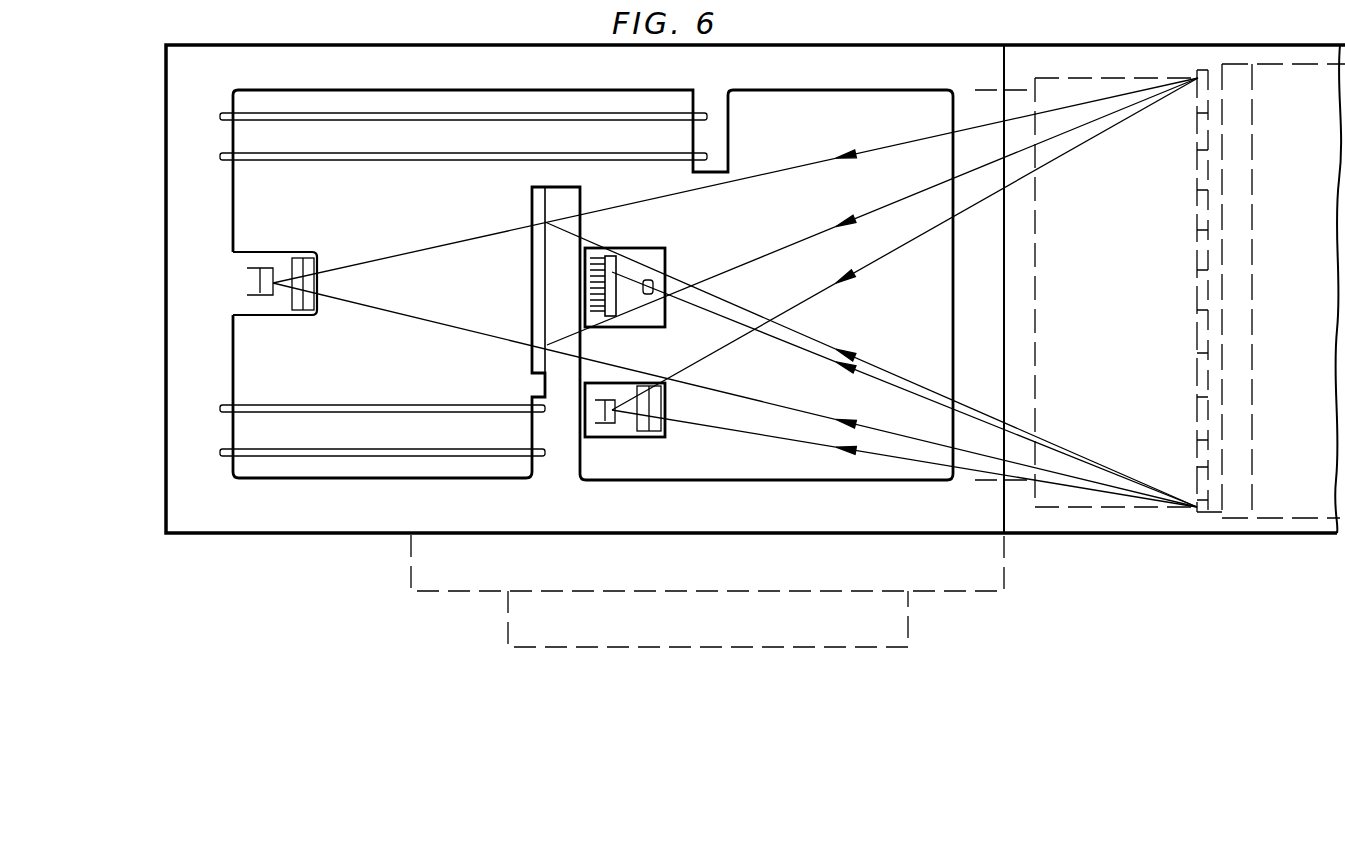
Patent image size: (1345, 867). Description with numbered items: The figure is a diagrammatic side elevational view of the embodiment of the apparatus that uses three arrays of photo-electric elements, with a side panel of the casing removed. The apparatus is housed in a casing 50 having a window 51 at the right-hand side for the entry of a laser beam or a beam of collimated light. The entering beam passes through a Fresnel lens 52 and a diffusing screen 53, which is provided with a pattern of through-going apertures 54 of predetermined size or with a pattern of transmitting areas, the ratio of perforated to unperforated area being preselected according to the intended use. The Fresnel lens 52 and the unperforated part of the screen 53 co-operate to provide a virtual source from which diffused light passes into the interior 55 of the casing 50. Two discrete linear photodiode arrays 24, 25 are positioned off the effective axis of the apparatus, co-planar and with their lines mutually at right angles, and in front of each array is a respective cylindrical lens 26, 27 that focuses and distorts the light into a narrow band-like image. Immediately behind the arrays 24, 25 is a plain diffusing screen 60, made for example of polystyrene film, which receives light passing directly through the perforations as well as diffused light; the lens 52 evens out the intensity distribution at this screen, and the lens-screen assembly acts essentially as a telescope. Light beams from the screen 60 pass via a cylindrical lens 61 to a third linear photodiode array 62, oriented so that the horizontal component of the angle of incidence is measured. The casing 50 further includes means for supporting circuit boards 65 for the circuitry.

The linear photodiode array 24 is at (610, 425).
The linear photodiode array 25 is at (613, 266).
The cylindrical lens 26 is at (646, 409).
The cylindrical lens 27 is at (653, 284).
The casing 50 is at (1069, 536).
The window 51 is at (1246, 263).
The Fresnel lens 52 is at (1215, 413).
The diffusing screen 53 is at (1200, 485).
The through-going apertures 54 is at (1198, 193).
The interior of the casing 55 is at (634, 285).
The diffusing screen 60 is at (534, 192).
The cylindrical lens 61 is at (302, 284).
The third linear photodiode array 62 is at (271, 298).
The circuit boards 65 is at (345, 121).